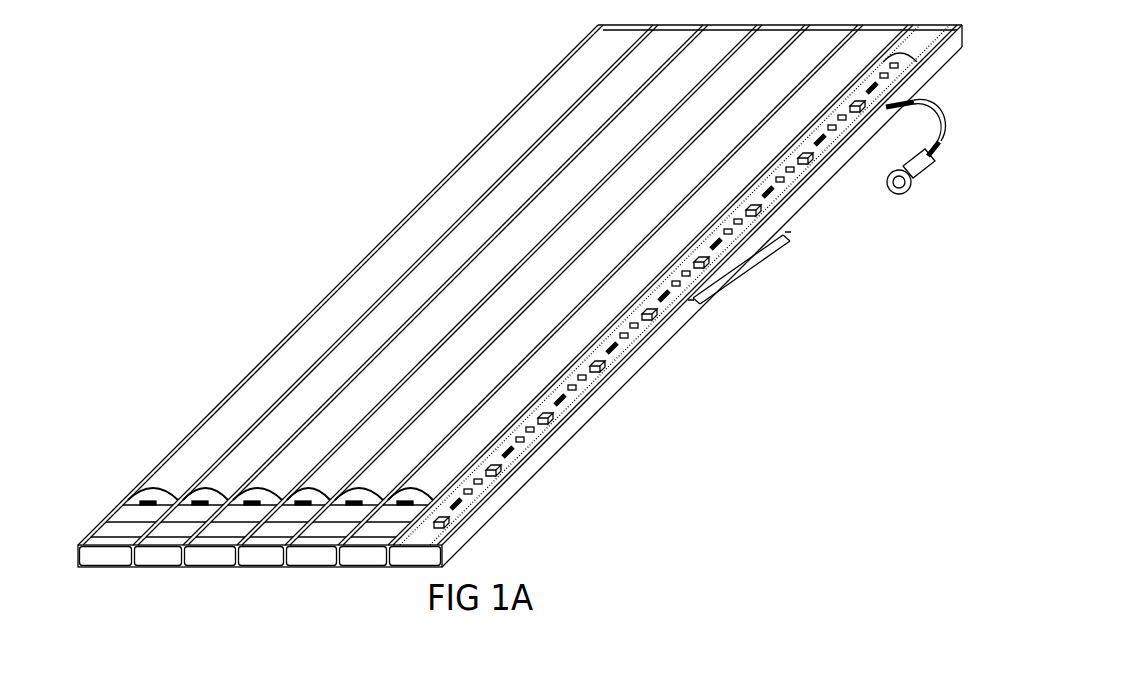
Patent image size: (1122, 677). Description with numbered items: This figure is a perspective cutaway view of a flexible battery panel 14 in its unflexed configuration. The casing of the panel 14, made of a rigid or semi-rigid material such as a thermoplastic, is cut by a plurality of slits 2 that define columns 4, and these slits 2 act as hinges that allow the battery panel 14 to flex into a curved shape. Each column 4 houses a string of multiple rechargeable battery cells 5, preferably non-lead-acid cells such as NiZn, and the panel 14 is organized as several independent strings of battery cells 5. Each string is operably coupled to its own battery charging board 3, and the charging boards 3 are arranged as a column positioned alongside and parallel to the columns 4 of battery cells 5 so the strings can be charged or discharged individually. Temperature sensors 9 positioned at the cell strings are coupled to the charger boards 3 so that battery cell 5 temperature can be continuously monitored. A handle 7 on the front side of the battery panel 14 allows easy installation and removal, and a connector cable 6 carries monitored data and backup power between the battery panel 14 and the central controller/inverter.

The slits 2 is at (285, 573).
The battery charging board 3 is at (458, 516).
The columns 4 is at (270, 380).
The battery cells 5 is at (491, 295).
The connector cable 6 is at (927, 172).
The handle 7 is at (767, 259).
The temperature sensors 9 is at (200, 507).
The flexible battery panel 14 is at (634, 365).